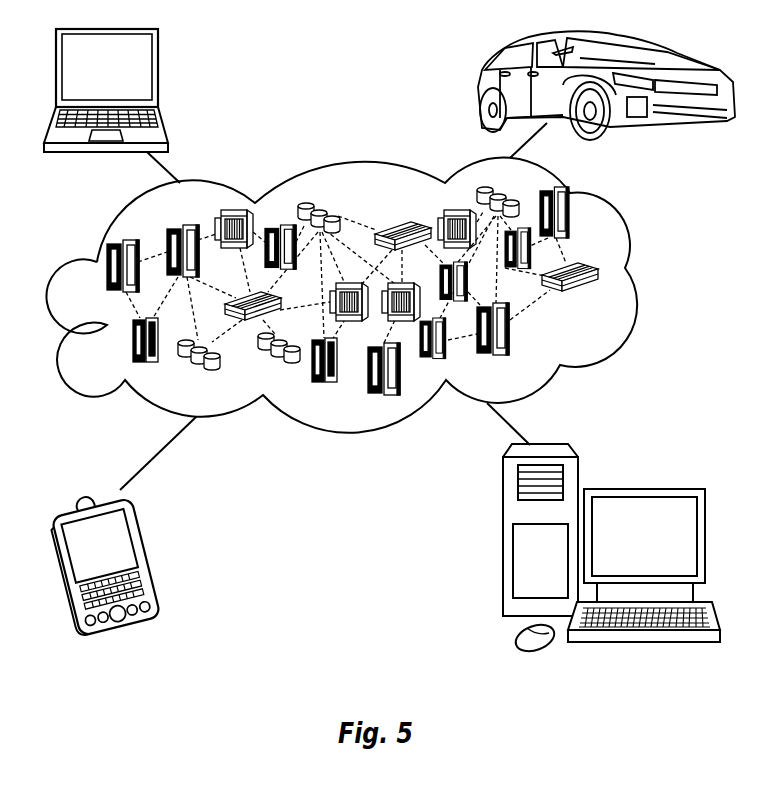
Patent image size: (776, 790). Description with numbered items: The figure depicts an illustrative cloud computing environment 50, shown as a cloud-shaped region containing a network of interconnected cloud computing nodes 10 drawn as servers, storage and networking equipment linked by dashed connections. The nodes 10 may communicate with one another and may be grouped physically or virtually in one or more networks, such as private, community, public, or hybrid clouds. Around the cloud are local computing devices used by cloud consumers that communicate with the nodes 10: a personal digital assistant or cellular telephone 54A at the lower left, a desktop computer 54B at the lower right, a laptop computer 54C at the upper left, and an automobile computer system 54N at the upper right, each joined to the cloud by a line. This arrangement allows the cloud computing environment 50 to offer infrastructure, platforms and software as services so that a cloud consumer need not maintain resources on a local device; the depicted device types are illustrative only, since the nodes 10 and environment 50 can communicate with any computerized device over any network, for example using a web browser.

The cloud computing nodes 10 is at (614, 306).
The cloud computing environment 50 is at (640, 273).
The personal digital assistant (PDA) or cellular telephone 54A is at (151, 553).
The desktop computer 54B is at (660, 489).
The laptop computer 54C is at (158, 62).
The automobile computer system 54N is at (480, 72).